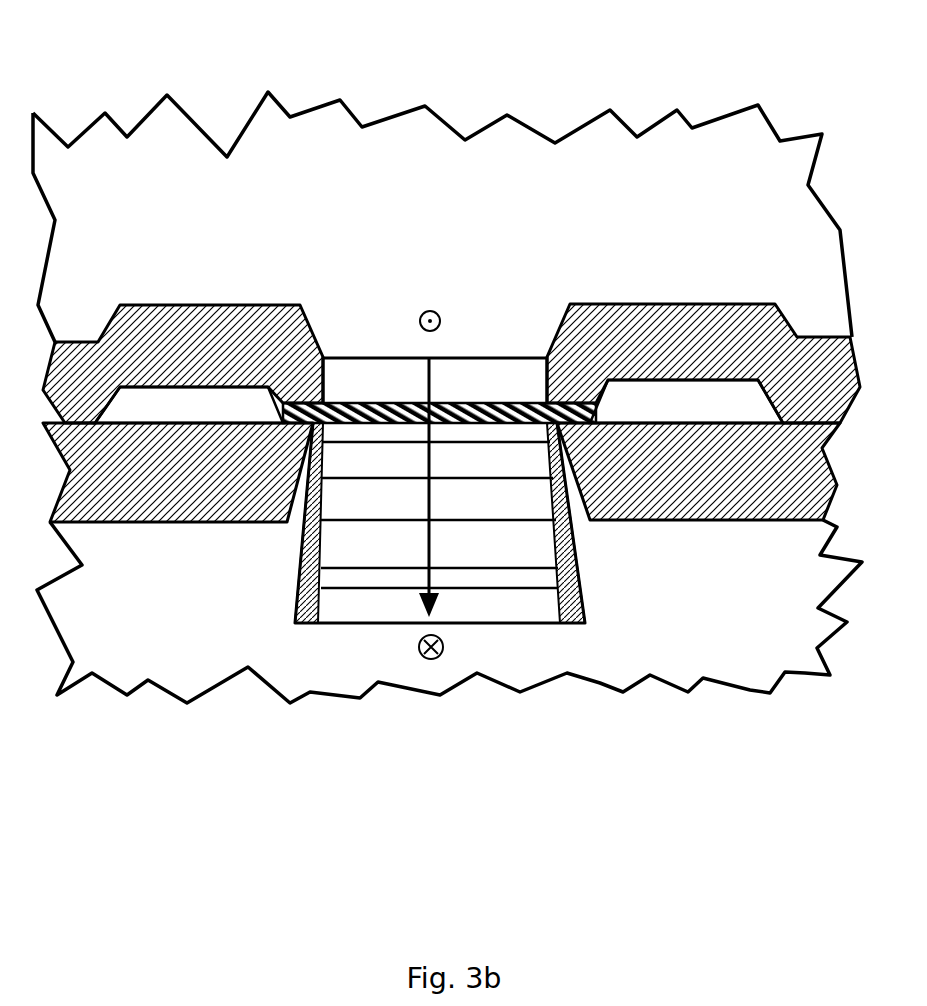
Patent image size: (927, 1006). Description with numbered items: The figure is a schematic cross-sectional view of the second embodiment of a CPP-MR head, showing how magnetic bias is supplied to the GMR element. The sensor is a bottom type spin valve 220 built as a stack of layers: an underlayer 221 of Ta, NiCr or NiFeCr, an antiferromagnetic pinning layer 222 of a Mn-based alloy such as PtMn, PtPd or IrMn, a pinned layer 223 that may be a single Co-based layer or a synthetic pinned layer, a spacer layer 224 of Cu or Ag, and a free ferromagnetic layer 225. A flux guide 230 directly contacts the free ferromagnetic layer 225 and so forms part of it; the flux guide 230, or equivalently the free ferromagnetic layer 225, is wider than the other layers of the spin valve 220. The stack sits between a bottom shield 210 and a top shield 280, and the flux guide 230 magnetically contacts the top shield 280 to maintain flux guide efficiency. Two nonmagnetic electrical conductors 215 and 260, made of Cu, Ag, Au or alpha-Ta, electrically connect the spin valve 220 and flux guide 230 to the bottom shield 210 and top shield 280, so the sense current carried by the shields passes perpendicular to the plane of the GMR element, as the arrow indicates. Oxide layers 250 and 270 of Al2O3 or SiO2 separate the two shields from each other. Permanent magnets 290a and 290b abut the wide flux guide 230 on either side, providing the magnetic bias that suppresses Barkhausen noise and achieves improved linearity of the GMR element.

The bottom shield 210 is at (212, 647).
The nonmagnetic electrical conductor 215 is at (332, 608).
The spin valve 220 is at (297, 543).
The underlayer 221 is at (357, 578).
The antiferromagnetic pinning layer 222 is at (380, 548).
The pinned layer 223 is at (455, 500).
The spacer layer 224 is at (478, 458).
The free ferromagnetic layer 225 is at (502, 428).
The flux guide 230 is at (465, 400).
The oxide layer 250 is at (143, 483).
The nonmagnetic electrical conductor 260 is at (395, 378).
The oxide layer 270 is at (197, 345).
The top shield 280 is at (228, 185).
The permanent magnet 290a is at (187, 407).
The permanent magnet 290b is at (703, 400).